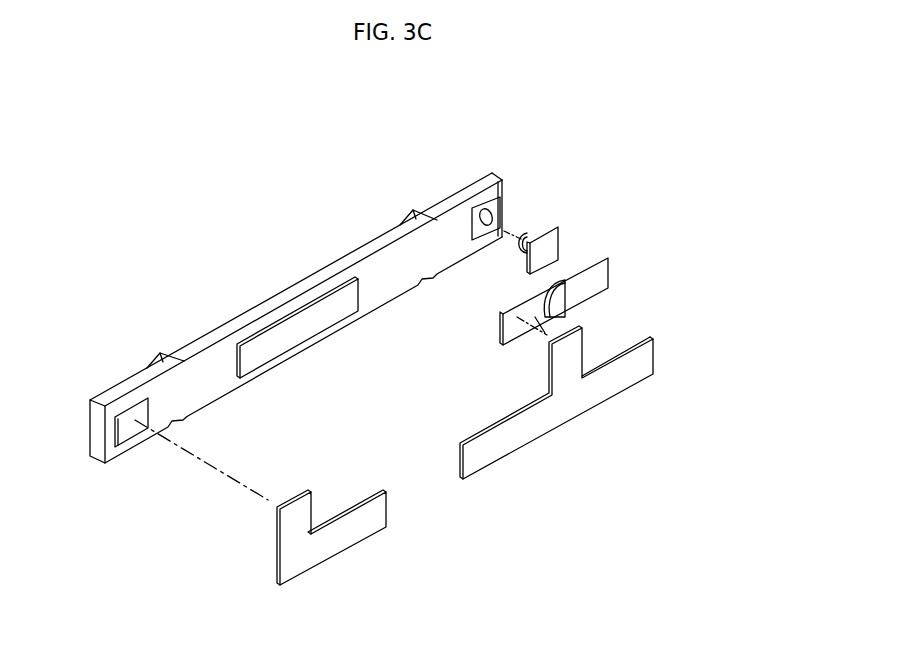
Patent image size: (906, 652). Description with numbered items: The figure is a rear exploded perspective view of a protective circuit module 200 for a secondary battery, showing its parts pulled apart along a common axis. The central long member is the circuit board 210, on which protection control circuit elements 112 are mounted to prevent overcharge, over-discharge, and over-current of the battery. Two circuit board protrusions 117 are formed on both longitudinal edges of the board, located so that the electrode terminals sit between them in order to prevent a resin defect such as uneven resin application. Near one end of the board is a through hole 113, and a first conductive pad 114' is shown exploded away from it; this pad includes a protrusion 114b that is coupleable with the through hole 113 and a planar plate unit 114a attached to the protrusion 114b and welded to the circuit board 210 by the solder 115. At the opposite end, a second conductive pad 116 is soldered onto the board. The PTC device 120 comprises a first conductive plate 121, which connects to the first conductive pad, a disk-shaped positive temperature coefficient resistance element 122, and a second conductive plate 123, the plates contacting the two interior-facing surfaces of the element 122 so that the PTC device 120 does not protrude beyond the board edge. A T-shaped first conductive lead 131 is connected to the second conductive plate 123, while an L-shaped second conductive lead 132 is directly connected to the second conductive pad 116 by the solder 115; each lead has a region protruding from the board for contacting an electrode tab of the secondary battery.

The protective circuit module 200 is at (186, 209).
The circuit board 210 is at (288, 294).
The circuit board protrusions 117 is at (172, 357).
The second conductive pad 116 is at (132, 411).
The protection control circuit elements 112 is at (300, 335).
The solder 115 is at (478, 209).
The through hole 113 is at (488, 214).
The first conductive pad 114' is at (609, 205).
The planar plate unit 114a is at (548, 247).
The protrusion 114b is at (528, 233).
The PTC device 120 is at (743, 229).
The first conductive plate 121 is at (590, 283).
The disk-shaped positive temperature coefficient resistance element 122 is at (556, 306).
The second conductive plate 123 is at (545, 323).
The first conductive lead 131 is at (573, 408).
The second conductive lead 132 is at (327, 548).